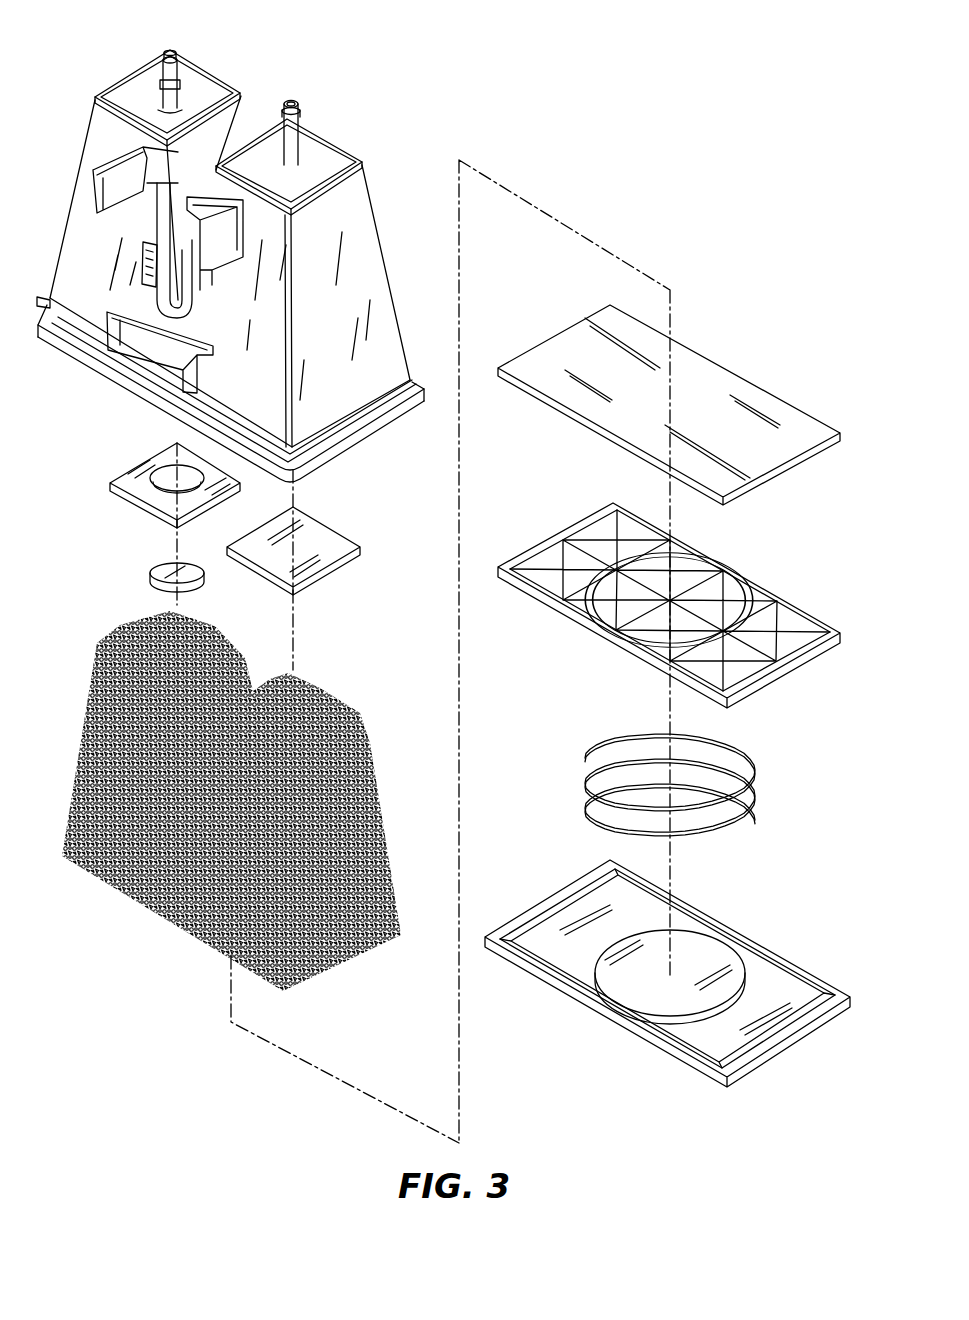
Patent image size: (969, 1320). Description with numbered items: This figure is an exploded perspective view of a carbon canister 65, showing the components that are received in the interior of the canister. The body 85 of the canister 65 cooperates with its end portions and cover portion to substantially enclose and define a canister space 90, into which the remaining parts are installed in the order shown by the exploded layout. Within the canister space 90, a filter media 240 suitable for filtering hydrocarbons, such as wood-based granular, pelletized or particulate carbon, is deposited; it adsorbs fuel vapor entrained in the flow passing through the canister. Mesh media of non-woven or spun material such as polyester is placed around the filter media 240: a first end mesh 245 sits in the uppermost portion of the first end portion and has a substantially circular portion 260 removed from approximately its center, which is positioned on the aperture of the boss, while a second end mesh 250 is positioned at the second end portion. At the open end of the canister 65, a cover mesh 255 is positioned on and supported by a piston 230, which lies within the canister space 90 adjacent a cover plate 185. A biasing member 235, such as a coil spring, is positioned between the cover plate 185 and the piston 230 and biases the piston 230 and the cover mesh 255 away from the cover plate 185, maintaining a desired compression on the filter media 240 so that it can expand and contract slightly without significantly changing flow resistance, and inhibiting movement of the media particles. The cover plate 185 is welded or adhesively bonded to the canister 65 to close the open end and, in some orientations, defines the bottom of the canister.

The canister 65 is at (362, 86).
The body 85 is at (80, 243).
The canister space 90 is at (95, 406).
The first end mesh 245 is at (118, 502).
The second end mesh 250 is at (335, 535).
The circular portion 260 is at (150, 575).
The filter media 240 is at (367, 740).
The cover mesh 255 is at (710, 370).
The piston 230 is at (757, 578).
The biasing member 235 is at (760, 742).
The cover plate 185 is at (556, 1003).